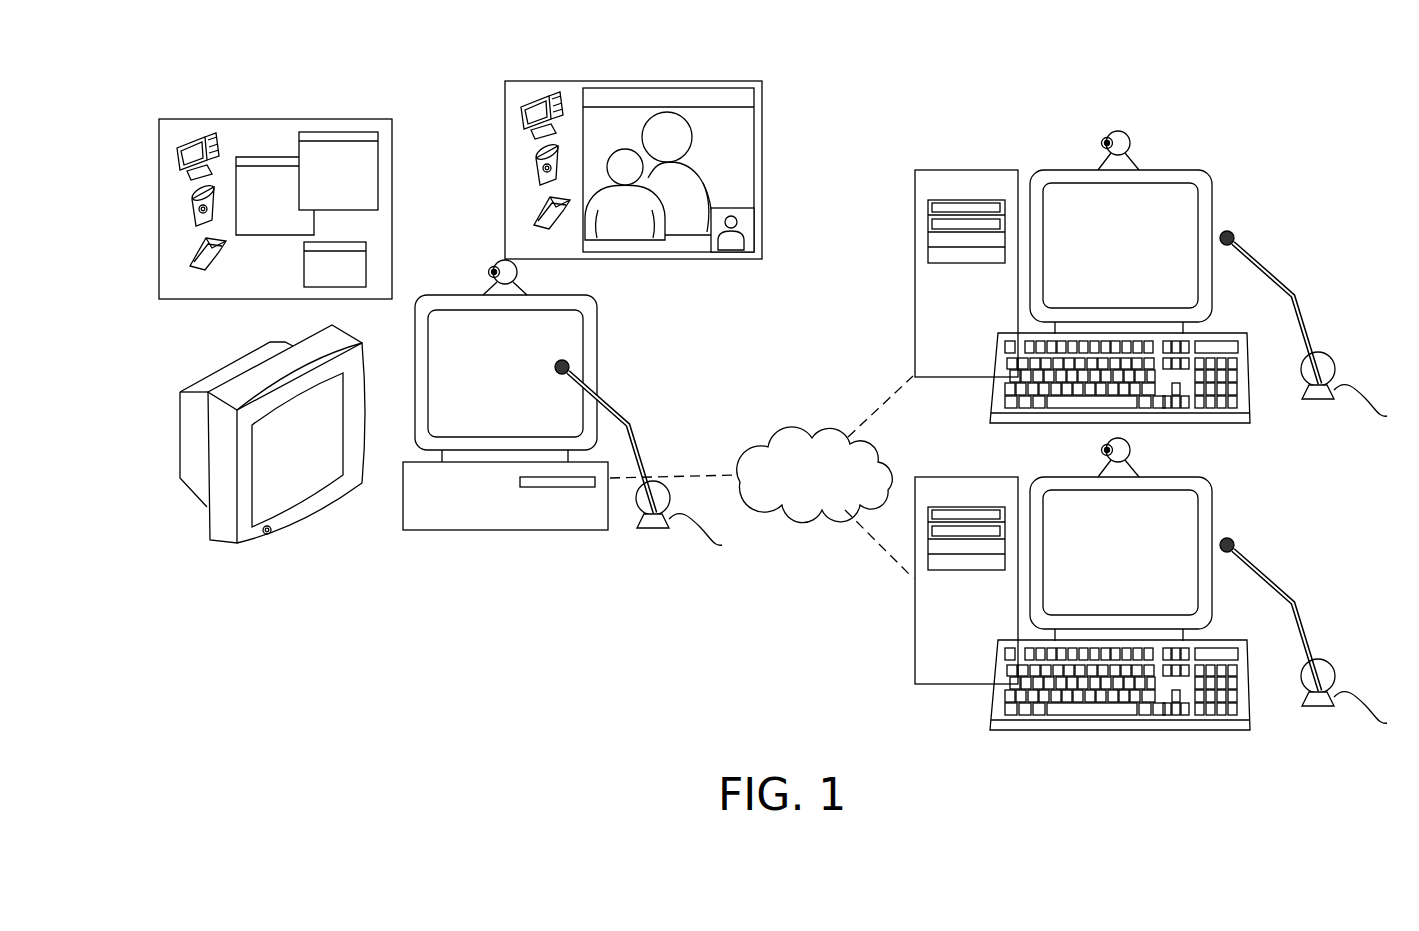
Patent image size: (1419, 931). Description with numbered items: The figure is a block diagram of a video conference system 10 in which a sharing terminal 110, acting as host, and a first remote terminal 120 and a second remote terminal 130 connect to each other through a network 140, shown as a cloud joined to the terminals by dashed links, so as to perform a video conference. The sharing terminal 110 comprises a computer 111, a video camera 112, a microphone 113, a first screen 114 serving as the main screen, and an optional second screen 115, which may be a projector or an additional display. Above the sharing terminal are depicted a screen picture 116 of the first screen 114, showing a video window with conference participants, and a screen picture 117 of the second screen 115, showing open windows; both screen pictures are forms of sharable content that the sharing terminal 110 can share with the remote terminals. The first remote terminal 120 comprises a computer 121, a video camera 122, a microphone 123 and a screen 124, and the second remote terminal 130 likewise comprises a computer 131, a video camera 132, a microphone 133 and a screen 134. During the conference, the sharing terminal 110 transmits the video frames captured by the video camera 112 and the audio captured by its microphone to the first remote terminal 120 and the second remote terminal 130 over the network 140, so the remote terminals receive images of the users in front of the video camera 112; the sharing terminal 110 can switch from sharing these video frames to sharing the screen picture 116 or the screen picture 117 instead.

The video conference system 10 is at (483, 56).
The sharing terminal 110 is at (562, 444).
The computer 111 is at (505, 531).
The video camera 112 is at (517, 272).
The microphone 113 is at (640, 428).
The first screen 114 is at (597, 333).
The second screen 115 is at (222, 543).
The screen picture 116 is at (633, 81).
The screen picture 117 is at (271, 119).
The first remote terminal 120 is at (1116, 260).
The computer 121 is at (915, 272).
The video camera 122 is at (1130, 143).
The microphone 123 is at (1305, 300).
The screen 124 is at (1213, 205).
The second remote terminal 130 is at (1116, 611).
The computer 131 is at (915, 630).
The video camera 132 is at (1130, 450).
The microphone 133 is at (1305, 607).
The screen 134 is at (1213, 512).
The network 140 is at (817, 433).